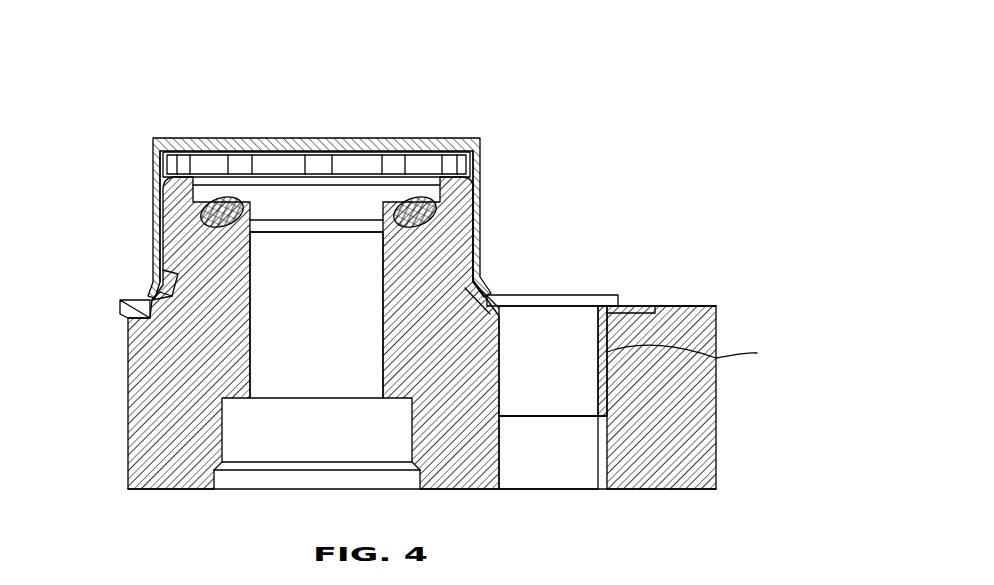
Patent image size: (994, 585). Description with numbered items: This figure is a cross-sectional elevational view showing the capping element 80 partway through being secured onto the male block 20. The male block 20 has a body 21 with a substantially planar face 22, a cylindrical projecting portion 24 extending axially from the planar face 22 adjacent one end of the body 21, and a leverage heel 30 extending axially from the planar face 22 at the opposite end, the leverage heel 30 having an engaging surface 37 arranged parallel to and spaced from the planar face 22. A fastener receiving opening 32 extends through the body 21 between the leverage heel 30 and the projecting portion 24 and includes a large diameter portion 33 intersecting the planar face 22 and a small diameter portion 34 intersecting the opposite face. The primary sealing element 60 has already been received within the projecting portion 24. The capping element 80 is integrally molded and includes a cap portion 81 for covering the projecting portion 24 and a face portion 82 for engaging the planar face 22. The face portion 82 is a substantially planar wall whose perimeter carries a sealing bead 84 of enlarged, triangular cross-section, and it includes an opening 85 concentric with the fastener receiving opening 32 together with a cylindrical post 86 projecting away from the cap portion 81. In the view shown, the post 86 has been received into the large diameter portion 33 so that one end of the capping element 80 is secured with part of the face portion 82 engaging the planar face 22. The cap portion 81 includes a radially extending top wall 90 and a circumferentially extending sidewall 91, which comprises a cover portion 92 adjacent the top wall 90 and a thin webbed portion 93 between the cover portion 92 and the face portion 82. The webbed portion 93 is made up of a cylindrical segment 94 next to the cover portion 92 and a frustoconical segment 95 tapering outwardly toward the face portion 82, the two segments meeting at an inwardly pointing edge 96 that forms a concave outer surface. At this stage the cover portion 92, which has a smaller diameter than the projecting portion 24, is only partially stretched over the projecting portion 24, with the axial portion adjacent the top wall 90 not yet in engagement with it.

The capping element 80 is at (310, 165).
The cap portion 81 is at (148, 130).
The top wall 90 is at (316, 137).
The sidewall 91 is at (158, 165).
The cover portion 92 is at (483, 161).
The projecting portion 24 is at (478, 212).
The webbed portion 93 is at (150, 276).
The edge 96 is at (156, 292).
The sealing bead 84 is at (122, 304).
The primary sealing element 60 is at (318, 226).
The cylindrical segment 94 is at (484, 287).
The frustoconical segment 95 is at (494, 297).
The face portion 82 is at (645, 306).
The engaging surface 37 is at (685, 306).
The planar face 22 is at (633, 306).
The leverage heel 30 is at (703, 306).
The opening 85 is at (598, 345).
The post 86 is at (696, 353).
The fastener receiving opening 32 is at (553, 361).
The large diameter portion 33 is at (598, 376).
The small diameter portion 34 is at (597, 456).
The male seal fitting block 20 is at (478, 333).
The body 21 is at (688, 400).